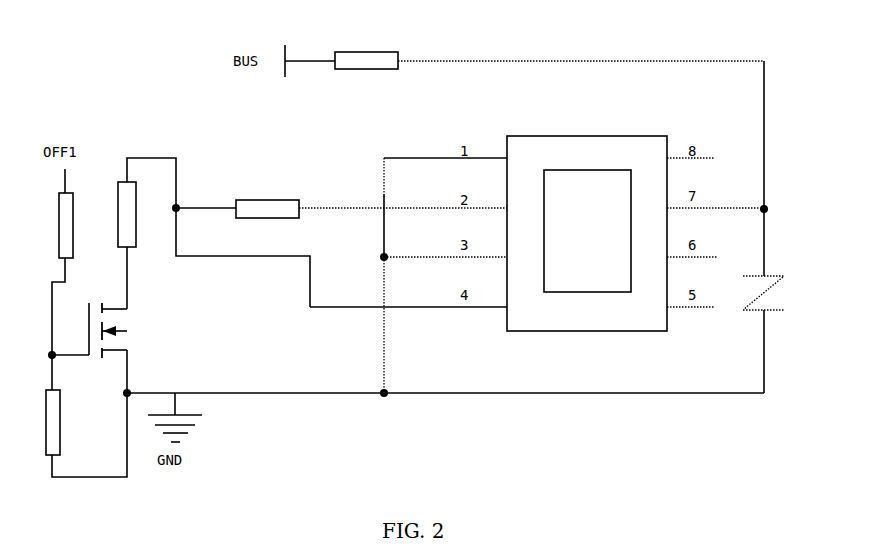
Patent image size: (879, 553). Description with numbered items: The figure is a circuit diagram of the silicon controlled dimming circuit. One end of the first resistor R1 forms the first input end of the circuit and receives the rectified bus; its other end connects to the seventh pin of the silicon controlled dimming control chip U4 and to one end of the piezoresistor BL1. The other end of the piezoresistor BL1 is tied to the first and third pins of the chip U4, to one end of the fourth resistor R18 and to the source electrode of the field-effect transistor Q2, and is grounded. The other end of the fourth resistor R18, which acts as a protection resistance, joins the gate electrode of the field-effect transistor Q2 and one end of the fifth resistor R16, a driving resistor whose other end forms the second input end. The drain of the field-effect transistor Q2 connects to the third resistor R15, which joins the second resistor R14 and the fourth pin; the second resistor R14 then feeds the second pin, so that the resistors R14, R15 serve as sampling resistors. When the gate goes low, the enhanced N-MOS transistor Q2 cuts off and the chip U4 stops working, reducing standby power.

The first resistor R1 is at (366, 46).
The second resistor R14 is at (267, 194).
The third resistor R15 is at (138, 205).
The fifth resistor R16 is at (45, 225).
The fourth resistor R18 is at (69, 422).
The field-effect transistor Q2 is at (104, 330).
The silicon controlled dimming control chip U4 is at (576, 250).
The piezoresistor BL1 is at (781, 293).